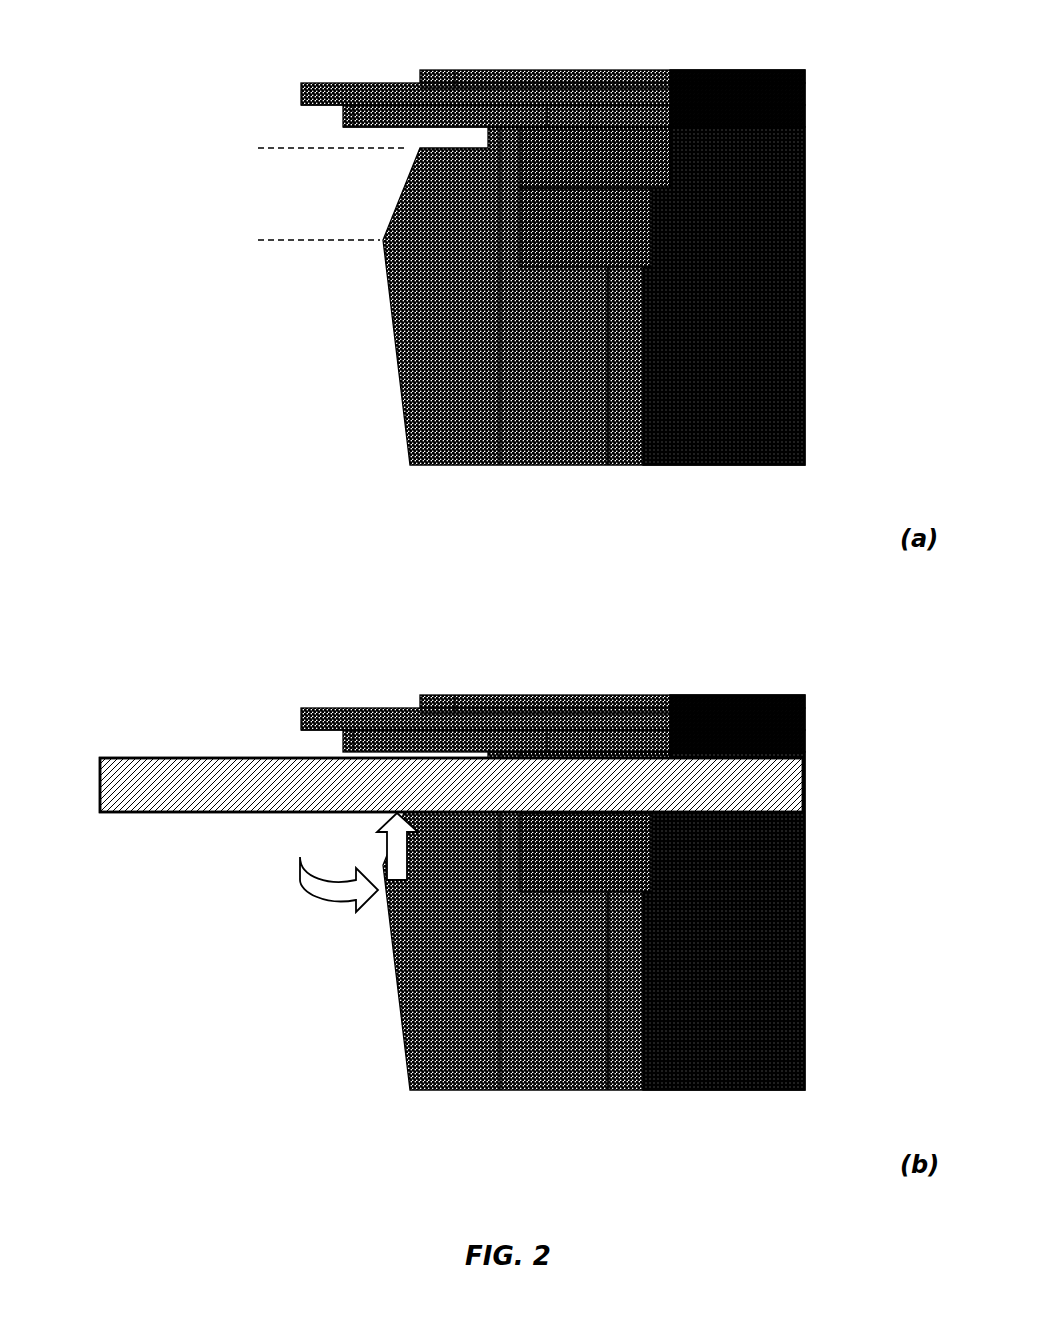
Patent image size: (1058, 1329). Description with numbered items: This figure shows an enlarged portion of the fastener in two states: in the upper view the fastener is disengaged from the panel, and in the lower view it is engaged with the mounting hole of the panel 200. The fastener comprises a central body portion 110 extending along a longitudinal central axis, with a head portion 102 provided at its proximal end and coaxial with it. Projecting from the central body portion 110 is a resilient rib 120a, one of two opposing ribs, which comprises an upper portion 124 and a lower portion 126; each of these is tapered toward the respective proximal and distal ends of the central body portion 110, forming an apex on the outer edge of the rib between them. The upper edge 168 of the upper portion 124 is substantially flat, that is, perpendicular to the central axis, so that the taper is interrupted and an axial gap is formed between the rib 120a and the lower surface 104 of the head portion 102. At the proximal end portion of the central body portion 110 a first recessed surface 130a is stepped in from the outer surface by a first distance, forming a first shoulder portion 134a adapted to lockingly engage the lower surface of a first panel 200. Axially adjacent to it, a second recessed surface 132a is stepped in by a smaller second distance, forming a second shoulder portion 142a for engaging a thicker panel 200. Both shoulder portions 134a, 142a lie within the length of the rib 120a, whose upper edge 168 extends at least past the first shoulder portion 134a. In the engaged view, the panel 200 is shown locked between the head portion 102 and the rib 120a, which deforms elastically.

The head portion 102 is at (322, 90).
The lower surface of the head portion 104 is at (362, 125).
The upper edge 168 is at (422, 142).
The upper portion 124 is at (249, 148).
The lower portion 126 is at (249, 242).
The rib 120a is at (440, 427).
The first shoulder portion 134a is at (615, 180).
The first recessed surface 130a is at (653, 162).
The second recessed surface 132a is at (598, 228).
The second shoulder portion 142a is at (592, 275).
The central body portion 110 is at (693, 435).
The panel 200 is at (100, 767).